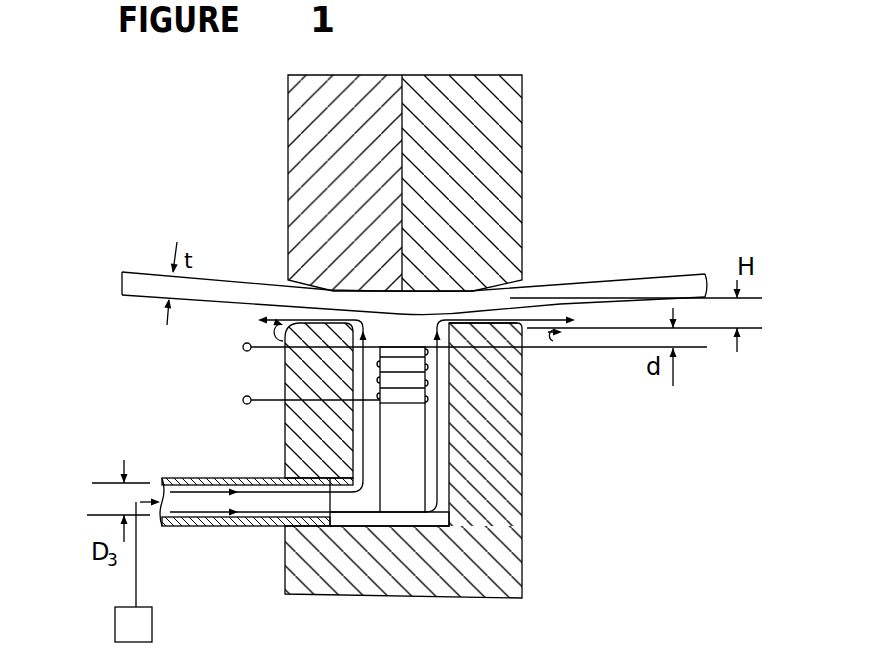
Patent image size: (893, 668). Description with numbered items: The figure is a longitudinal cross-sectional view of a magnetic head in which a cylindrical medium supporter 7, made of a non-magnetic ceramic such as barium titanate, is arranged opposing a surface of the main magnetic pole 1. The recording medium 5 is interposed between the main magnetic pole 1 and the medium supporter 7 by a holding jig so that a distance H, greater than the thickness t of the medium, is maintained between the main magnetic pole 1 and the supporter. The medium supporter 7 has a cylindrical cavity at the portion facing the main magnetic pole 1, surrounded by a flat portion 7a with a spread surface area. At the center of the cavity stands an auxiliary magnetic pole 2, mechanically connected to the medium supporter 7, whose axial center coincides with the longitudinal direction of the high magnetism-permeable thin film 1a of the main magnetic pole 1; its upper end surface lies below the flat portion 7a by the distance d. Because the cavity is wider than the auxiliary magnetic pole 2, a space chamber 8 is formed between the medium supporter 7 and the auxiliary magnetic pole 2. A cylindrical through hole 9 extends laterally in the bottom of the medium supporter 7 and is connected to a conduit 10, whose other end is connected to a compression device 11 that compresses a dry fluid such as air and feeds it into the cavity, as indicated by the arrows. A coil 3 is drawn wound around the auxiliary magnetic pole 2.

The main magnetic pole 1 is at (510, 192).
The high magnetism-permeable thin film 1a is at (403, 115).
The recording medium 5 is at (640, 290).
The medium supporter 7 is at (488, 505).
The flat portion 7a is at (522, 360).
The heating coil 3 is at (425, 405).
The auxiliary magnetic pole 2 is at (425, 450).
The space chamber 8 is at (436, 515).
The through hole 9 is at (349, 517).
The conduit 10 is at (193, 521).
The compression device 11 is at (153, 622).